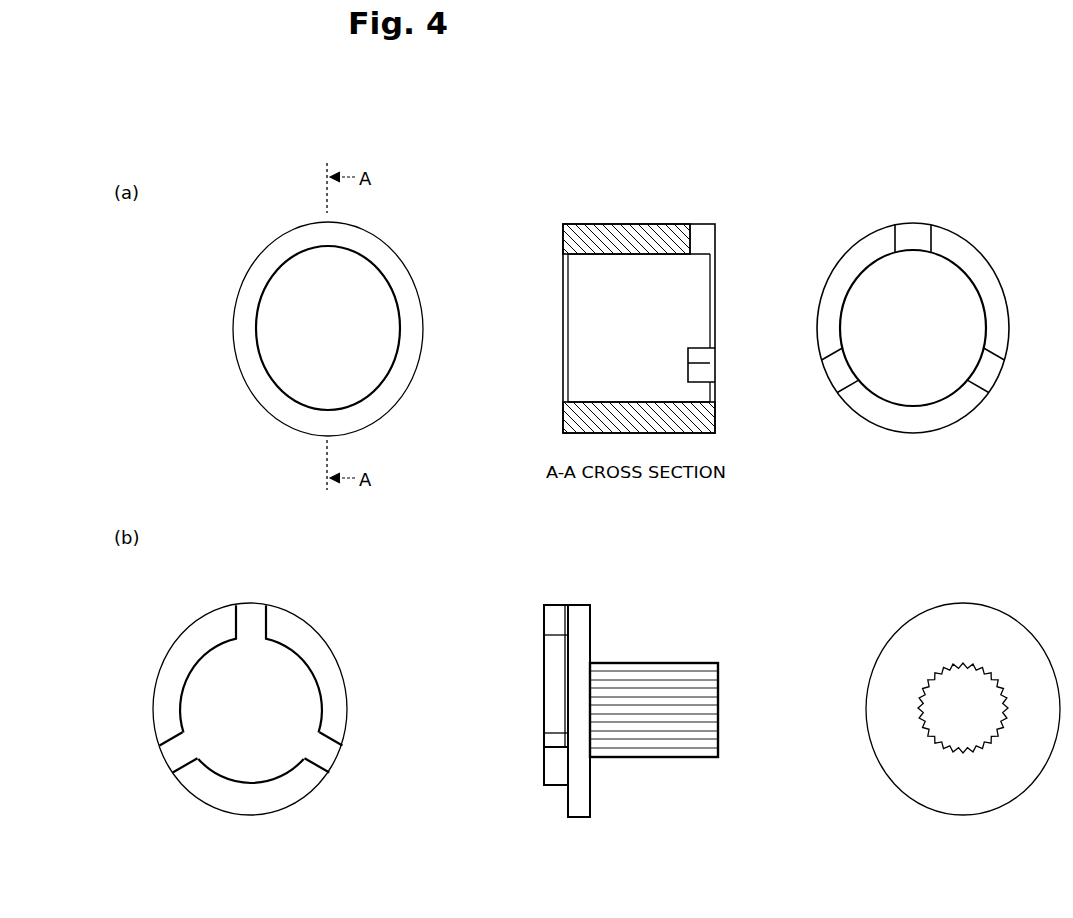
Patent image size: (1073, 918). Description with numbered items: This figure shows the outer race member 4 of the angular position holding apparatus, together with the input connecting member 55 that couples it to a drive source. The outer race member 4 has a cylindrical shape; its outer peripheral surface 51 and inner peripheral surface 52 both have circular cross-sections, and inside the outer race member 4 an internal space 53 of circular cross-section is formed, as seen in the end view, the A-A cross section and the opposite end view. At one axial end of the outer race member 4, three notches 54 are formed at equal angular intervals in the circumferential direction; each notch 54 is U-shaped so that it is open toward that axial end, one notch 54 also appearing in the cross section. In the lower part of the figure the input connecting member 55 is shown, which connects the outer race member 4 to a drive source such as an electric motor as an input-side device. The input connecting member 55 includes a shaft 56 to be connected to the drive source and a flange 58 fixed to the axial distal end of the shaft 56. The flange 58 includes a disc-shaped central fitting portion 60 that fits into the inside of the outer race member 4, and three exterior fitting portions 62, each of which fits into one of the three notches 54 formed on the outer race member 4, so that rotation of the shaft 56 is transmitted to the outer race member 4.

The outer race member 4 is at (638, 134).
The outer peripheral surface 51 is at (606, 222).
The inner peripheral surface 52 is at (580, 255).
The internal space 53 is at (594, 323).
The notches 54 is at (700, 223).
The input connecting member 55 is at (587, 581).
The shaft 56 is at (650, 663).
The flange 58 is at (582, 822).
The central fitting portion 60 is at (213, 677).
The exterior fitting portions 62 is at (234, 621).